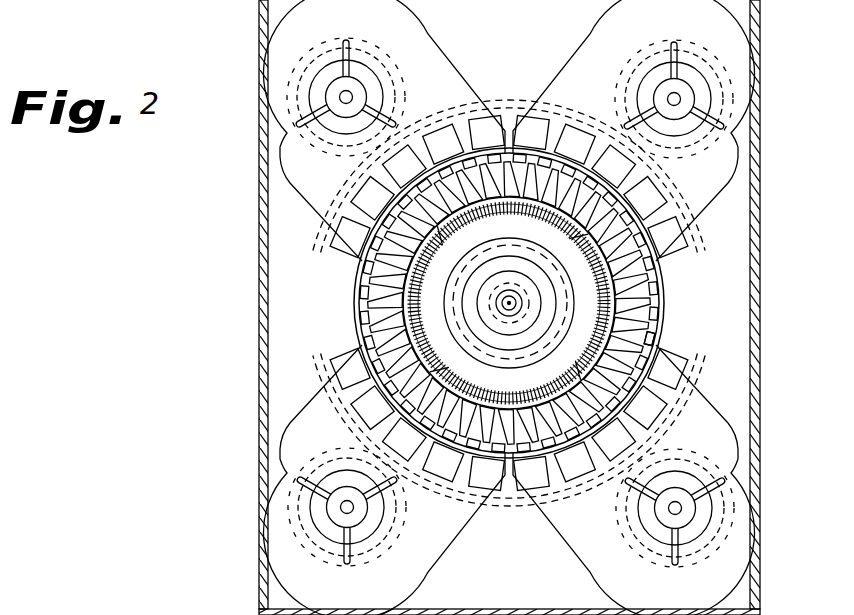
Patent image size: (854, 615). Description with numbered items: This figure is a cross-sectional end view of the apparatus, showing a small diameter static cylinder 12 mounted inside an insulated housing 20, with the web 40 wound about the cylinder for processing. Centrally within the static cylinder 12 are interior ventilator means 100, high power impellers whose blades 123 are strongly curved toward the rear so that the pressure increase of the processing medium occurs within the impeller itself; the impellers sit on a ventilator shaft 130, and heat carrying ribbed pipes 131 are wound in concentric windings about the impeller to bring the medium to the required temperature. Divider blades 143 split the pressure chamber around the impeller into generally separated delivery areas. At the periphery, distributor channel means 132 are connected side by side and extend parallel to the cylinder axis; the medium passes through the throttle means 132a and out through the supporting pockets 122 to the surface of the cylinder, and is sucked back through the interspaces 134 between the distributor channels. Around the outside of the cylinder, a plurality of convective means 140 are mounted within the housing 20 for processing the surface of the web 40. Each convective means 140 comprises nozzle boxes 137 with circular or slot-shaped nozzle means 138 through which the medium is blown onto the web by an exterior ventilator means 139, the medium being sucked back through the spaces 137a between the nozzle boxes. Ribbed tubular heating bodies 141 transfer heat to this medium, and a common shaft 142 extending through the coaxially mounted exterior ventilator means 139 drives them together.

The static cylinder 12 is at (654, 340).
The insulated housing 20 is at (760, 23).
The web 40 is at (353, 297).
The interior ventilator means 100 is at (584, 270).
The supporting pockets 122 is at (659, 325).
The blades 123 is at (568, 330).
The ventilator shaft 130 is at (503, 303).
The ribbed pipes 131 is at (509, 303).
The distributor channel means 132 is at (658, 289).
The throttle means 132a is at (656, 353).
The interspaces 134 is at (660, 267).
The nozzle boxes 137 is at (674, 423).
The spaces between the nozzle boxes 137a is at (676, 439).
The nozzle means 138 is at (648, 375).
The exterior ventilator means 139 is at (640, 535).
The convective means 140 is at (458, 48).
The ribbed tubular heating bodies 141 is at (669, 190).
The common shaft 142 is at (677, 96).
The divider blades 143 is at (448, 252).